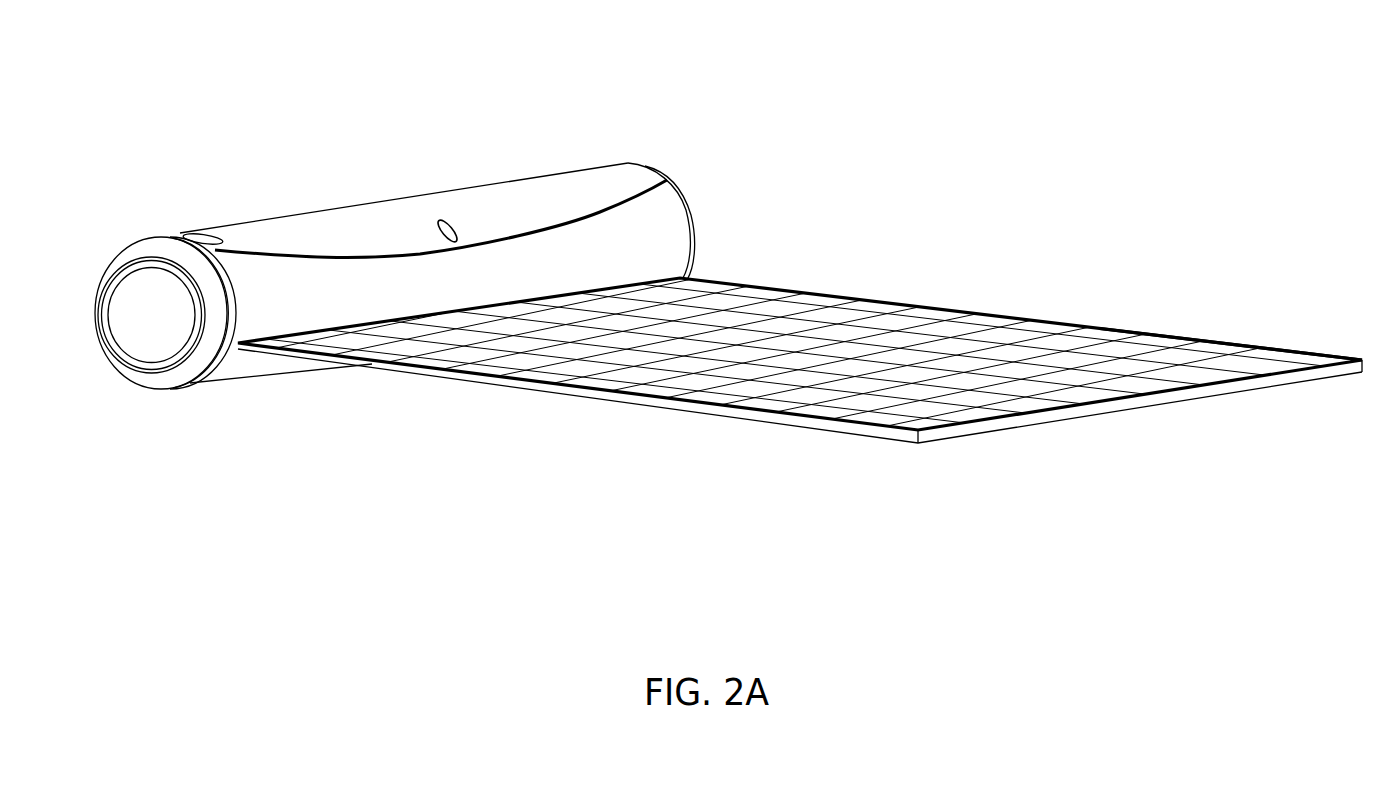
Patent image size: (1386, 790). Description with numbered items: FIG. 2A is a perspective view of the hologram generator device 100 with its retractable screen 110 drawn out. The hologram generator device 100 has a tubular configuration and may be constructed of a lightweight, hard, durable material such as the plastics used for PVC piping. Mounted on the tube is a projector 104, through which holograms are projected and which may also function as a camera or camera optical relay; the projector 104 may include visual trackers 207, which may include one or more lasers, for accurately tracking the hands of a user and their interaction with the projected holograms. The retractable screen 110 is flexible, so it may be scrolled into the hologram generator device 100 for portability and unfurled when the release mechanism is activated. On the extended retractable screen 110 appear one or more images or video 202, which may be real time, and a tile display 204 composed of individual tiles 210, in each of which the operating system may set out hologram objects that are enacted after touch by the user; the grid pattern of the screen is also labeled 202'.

The hologram generator device 100 is at (772, 133).
The projector 104 is at (443, 222).
The retractable screen 110 is at (477, 380).
The image or video 202 is at (800, 323).
The pixel grid of display panel 202' is at (768, 416).
The tile display 204 is at (1037, 333).
The visual tracker 207 is at (437, 225).
The tile 210 is at (1252, 347).